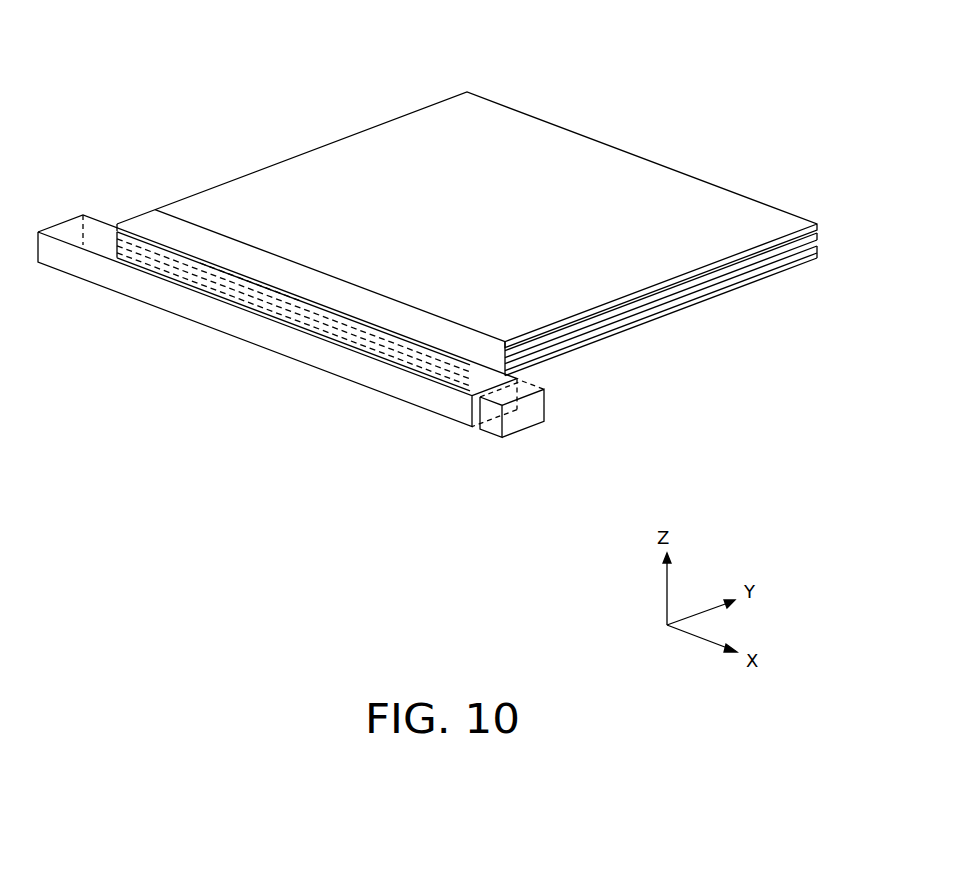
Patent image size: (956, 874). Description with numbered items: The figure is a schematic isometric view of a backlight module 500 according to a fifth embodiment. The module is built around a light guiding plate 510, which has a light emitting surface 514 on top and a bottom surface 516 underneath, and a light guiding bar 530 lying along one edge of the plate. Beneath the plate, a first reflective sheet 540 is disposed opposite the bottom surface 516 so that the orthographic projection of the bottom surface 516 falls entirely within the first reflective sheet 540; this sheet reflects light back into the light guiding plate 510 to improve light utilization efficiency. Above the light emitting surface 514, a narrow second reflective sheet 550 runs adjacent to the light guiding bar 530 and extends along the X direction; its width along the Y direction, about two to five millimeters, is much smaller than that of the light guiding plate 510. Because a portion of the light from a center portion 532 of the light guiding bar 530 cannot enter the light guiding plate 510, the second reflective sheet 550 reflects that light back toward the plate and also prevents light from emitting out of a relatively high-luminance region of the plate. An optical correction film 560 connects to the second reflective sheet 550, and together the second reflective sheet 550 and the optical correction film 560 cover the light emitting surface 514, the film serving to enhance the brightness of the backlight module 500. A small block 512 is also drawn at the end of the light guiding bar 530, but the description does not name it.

The backlight module 500 is at (237, 52).
The light guiding plate 510 is at (773, 253).
The light incident portion 512 is at (455, 368).
The light emitting surface 514 is at (735, 262).
The bottom surface 516 is at (685, 304).
The light guiding bar 530 is at (78, 218).
The center portion 532 is at (258, 272).
The first reflective sheet 540 is at (737, 290).
The second reflective sheet 550 is at (178, 230).
The optical correction film 560 is at (535, 312).